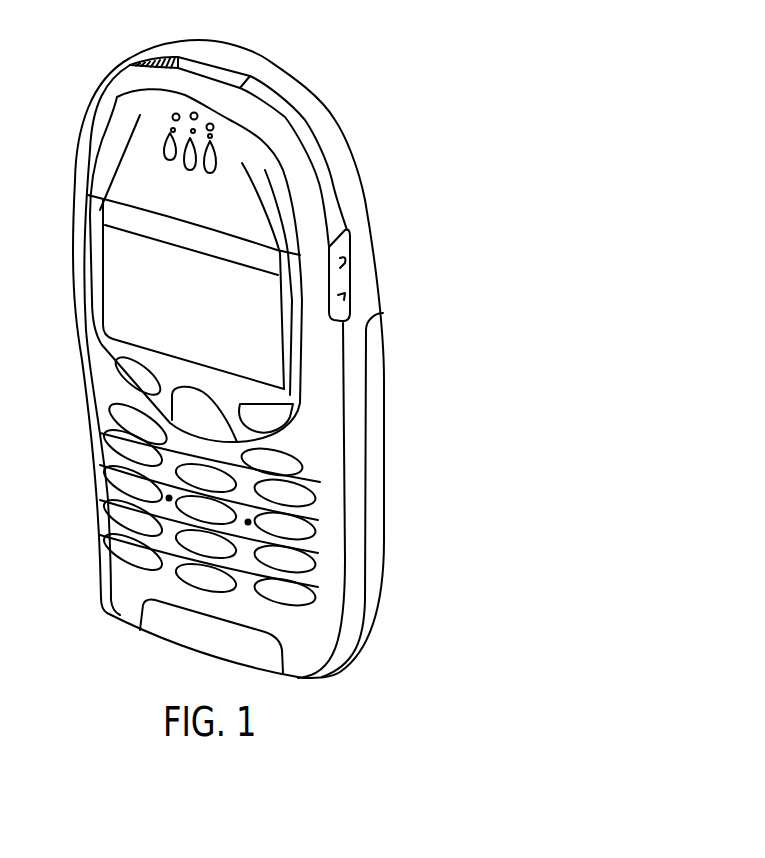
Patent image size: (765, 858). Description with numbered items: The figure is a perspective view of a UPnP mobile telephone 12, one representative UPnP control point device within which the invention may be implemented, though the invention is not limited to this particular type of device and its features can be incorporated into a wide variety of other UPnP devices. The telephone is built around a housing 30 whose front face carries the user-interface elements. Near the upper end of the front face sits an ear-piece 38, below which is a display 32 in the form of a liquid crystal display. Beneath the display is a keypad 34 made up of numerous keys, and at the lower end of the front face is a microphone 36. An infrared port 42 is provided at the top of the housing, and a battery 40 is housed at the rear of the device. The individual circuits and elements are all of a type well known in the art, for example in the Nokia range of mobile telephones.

The UPnP mobile telephone 12 is at (327, 53).
The housing 30 is at (357, 175).
The display 32 is at (260, 337).
The keypad 34 is at (282, 603).
The microphone 36 is at (157, 625).
The ear-piece 38 is at (170, 137).
The battery 40 is at (377, 587).
The infrared port 42 is at (210, 70).